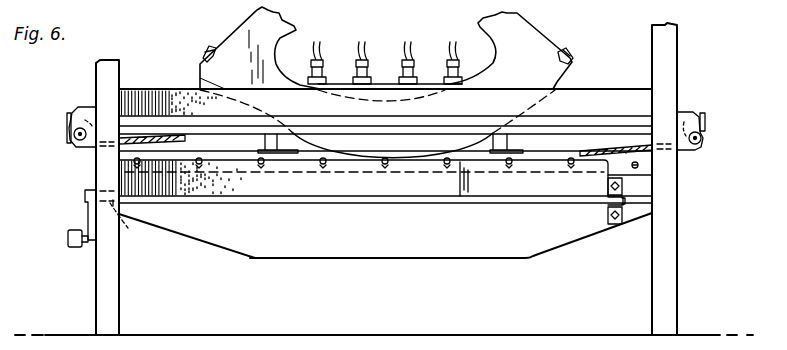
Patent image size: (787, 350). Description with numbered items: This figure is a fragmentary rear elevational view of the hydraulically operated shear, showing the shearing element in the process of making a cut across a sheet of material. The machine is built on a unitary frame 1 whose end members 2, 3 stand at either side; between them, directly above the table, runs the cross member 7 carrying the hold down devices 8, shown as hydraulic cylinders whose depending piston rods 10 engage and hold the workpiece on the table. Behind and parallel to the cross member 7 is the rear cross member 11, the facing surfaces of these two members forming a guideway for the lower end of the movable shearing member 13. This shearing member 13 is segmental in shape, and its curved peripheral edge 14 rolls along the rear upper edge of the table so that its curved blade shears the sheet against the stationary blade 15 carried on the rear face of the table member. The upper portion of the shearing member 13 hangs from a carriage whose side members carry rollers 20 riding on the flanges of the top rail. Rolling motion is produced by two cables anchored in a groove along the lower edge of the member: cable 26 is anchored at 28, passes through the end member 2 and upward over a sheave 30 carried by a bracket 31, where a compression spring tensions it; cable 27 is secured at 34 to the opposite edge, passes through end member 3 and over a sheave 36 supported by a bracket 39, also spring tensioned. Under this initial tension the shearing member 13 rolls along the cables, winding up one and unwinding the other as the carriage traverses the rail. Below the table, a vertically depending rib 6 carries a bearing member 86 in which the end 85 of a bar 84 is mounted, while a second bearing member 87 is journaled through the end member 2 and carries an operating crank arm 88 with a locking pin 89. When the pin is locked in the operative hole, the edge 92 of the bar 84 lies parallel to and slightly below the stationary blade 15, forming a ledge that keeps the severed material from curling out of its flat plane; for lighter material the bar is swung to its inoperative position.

The frame 1 is at (258, 257).
The end member 2 is at (100, 300).
The end member 3 is at (673, 276).
The vertically depending rib 6 is at (373, 260).
The cross member 7 is at (196, 89).
The hold down devices 8 is at (337, 74).
The piston rods 10 is at (261, 140).
The rear cross member 11 is at (610, 100).
The shearing member 13 is at (473, 30).
The curved peripheral edge 14 is at (200, 77).
The stationary blade 15 is at (677, 174).
The rollers 20 is at (468, 143).
The cable 26 is at (67, 122).
The cable 27 is at (705, 118).
The anchor point 28 is at (568, 50).
The sheave 30 is at (70, 140).
The bracket 31 is at (88, 110).
The securing point 34 is at (208, 44).
The sheave 36 is at (703, 150).
The bracket 39 is at (690, 110).
The bar 84 is at (326, 190).
The end 85 is at (627, 207).
The bearing member 86 is at (607, 216).
The second bearing member 87 is at (128, 228).
The operating crank arm 88 is at (83, 208).
The locking pin 89 is at (90, 247).
The edge 92 is at (478, 162).